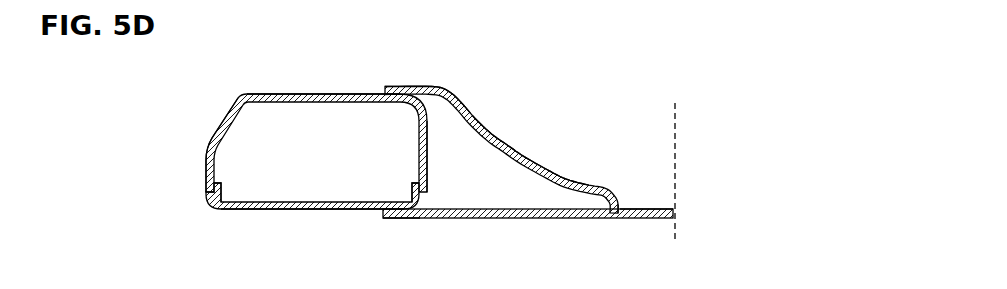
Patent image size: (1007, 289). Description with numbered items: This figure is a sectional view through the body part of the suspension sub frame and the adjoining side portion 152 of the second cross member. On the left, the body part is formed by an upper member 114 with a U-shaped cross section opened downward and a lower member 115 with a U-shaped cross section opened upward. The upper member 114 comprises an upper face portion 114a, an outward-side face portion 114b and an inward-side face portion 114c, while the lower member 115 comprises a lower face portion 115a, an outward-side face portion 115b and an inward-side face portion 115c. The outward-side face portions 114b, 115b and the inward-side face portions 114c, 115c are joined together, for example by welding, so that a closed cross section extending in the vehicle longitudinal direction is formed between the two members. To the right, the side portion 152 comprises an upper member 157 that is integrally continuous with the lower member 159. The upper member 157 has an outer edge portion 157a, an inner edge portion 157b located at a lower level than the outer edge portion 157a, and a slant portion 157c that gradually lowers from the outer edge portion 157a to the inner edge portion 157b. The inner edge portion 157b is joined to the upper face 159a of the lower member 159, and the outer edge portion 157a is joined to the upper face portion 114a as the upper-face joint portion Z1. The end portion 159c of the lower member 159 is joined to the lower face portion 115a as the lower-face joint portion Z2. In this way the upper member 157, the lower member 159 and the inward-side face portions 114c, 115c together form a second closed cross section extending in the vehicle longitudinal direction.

The upper member 114 is at (280, 93).
The upper face portion 114a is at (320, 93).
The outward-side face portion 114b is at (206, 170).
The inward-side face portion 114c is at (427, 157).
The lower member 115 is at (328, 210).
The lower face portion 115a is at (267, 210).
The outward-side face portion 115b is at (209, 197).
The inward-side face portion 115c is at (419, 197).
The side portion 152 is at (445, 77).
The upper member 157 is at (476, 118).
The outer edge portion 157a is at (392, 86).
The inner edge portion 157b is at (616, 195).
The slant portion 157c is at (502, 142).
The lower member 159 is at (507, 219).
The upper face 159a is at (648, 209).
The end portion 159c is at (392, 219).